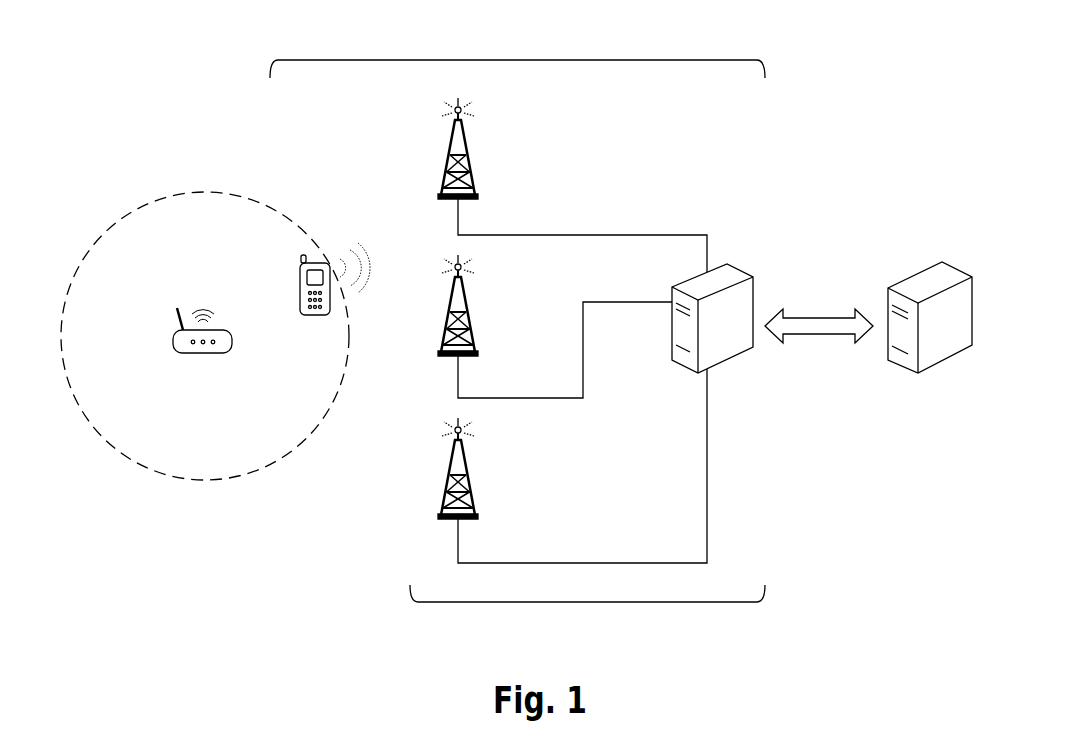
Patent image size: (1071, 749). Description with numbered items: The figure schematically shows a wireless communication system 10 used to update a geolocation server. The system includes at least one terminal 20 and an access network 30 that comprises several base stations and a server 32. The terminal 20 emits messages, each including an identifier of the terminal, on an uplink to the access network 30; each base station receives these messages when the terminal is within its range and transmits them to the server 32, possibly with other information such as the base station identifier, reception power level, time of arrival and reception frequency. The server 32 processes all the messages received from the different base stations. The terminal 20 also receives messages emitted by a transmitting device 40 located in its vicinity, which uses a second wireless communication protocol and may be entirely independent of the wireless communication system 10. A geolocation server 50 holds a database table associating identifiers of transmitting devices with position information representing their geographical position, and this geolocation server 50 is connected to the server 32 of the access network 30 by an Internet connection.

The wireless communication system 10 is at (517, 60).
The terminal 20 is at (300, 285).
The access network 30 is at (588, 602).
The server 32 is at (753, 293).
The transmitting device 40 is at (178, 333).
The geolocation server 50 is at (945, 265).